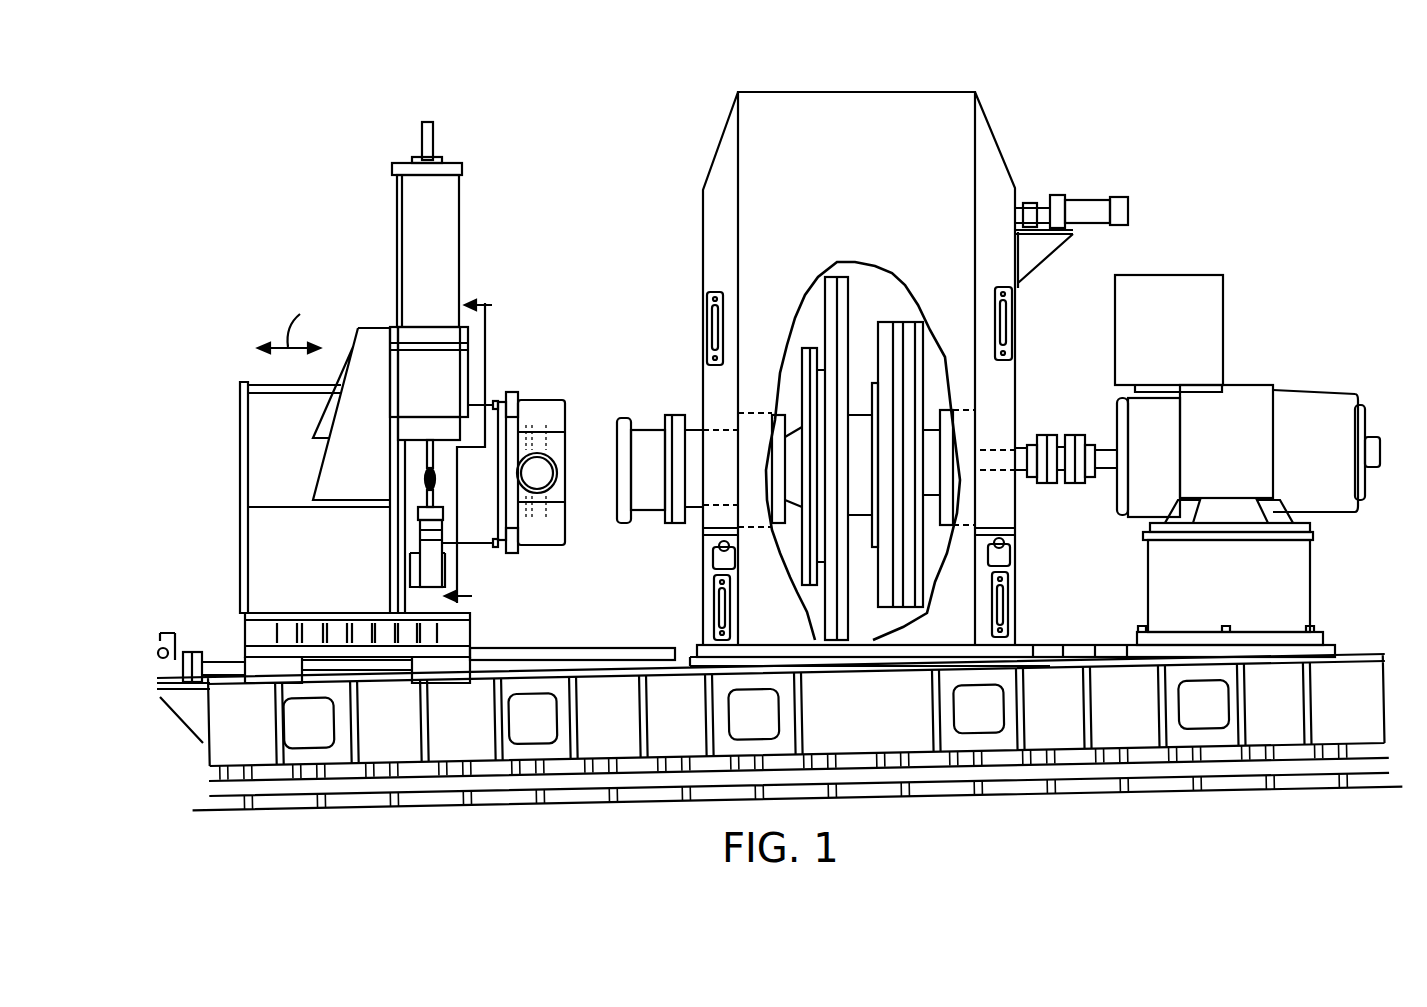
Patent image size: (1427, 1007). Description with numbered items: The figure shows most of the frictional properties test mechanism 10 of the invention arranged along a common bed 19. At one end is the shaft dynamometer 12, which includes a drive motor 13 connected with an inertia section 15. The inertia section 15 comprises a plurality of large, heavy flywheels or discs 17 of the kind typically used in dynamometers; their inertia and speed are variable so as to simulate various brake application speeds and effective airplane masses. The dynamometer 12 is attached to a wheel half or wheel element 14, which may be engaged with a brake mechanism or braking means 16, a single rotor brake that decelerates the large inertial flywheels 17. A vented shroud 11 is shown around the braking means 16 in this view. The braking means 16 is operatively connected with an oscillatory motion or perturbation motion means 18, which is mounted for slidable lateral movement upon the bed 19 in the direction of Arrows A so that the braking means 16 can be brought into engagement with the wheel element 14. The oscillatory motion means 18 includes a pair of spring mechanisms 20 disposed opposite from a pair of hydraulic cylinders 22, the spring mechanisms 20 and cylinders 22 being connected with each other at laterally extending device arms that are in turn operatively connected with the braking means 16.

The frictional properties test mechanism 10 is at (1114, 152).
The vented shroud 11 is at (545, 545).
The dynamometer 12 is at (1319, 371).
The drive motor 13 is at (1330, 395).
The wheel element 14 is at (645, 420).
The inertia section 15 is at (1003, 152).
The braking means 16 is at (548, 428).
The flywheels 17 is at (900, 322).
The oscillatory motion means 18 is at (376, 308).
The bed 19 is at (400, 748).
The spring mechanisms 20 is at (462, 222).
The hydraulic cylinders 22 is at (438, 570).